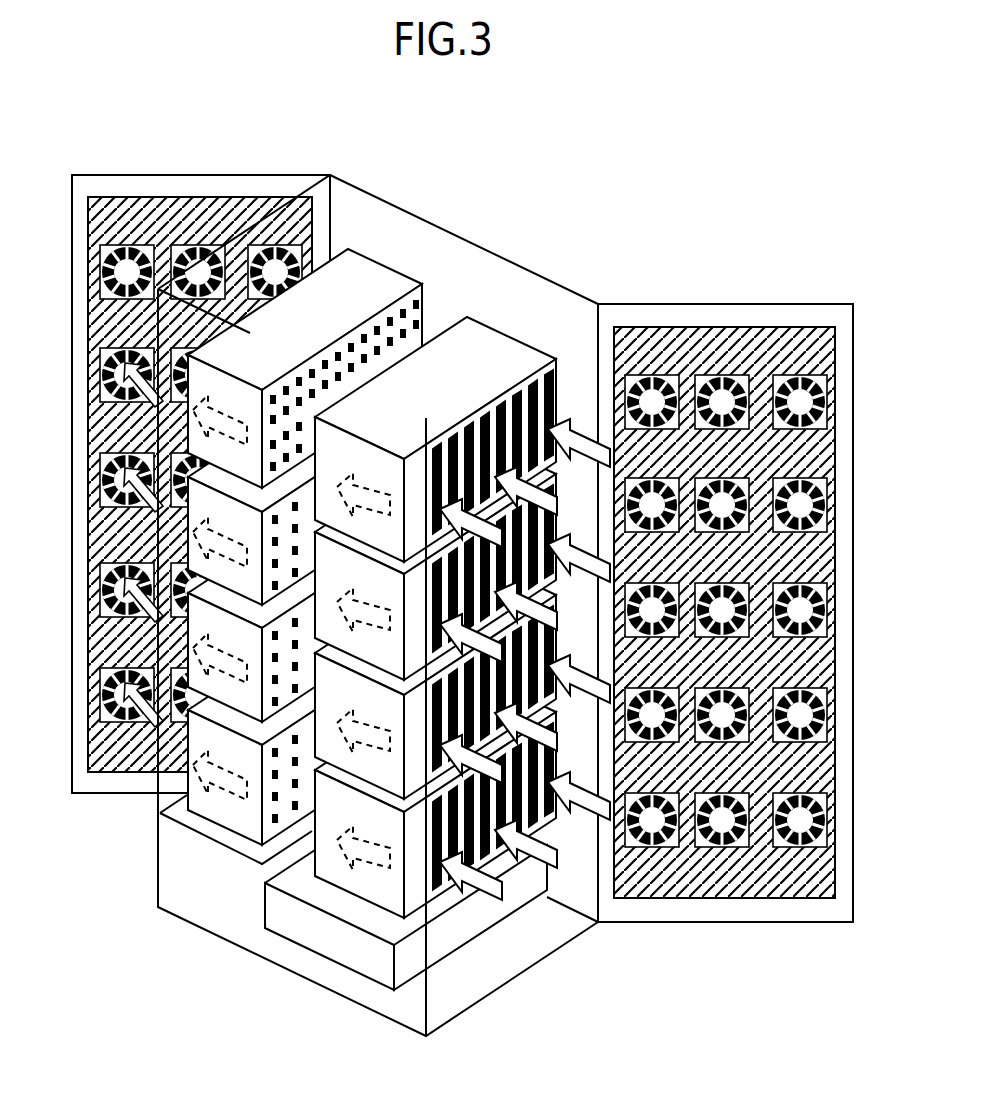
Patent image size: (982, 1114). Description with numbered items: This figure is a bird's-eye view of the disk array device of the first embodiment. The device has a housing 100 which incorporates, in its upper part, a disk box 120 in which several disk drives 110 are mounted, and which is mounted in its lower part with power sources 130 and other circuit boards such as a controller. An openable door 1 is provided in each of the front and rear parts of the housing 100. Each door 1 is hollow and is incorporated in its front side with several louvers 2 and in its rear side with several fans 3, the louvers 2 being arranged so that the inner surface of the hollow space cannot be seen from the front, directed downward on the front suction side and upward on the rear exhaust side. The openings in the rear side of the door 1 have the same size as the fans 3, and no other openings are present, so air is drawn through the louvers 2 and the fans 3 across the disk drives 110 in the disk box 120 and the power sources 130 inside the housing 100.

The door 1 is at (210, 195).
The louver 2 is at (215, 637).
The fan 3 is at (652, 398).
The housing 100 is at (362, 244).
The cooling fan 110 is at (568, 777).
The disk box 120 is at (373, 887).
The power source 130 is at (503, 897).